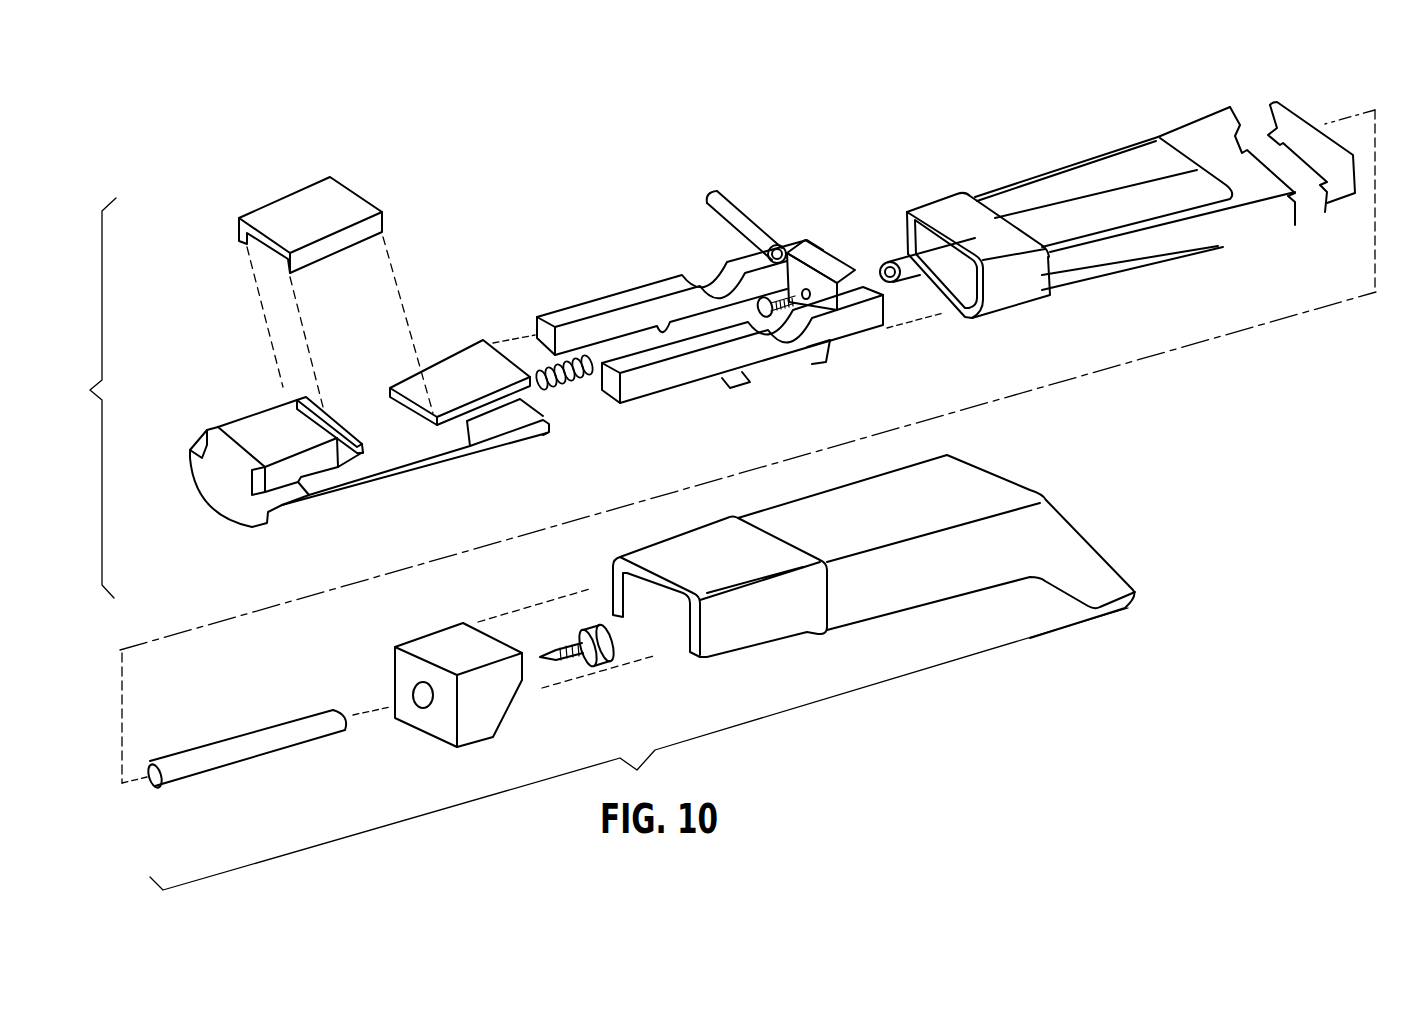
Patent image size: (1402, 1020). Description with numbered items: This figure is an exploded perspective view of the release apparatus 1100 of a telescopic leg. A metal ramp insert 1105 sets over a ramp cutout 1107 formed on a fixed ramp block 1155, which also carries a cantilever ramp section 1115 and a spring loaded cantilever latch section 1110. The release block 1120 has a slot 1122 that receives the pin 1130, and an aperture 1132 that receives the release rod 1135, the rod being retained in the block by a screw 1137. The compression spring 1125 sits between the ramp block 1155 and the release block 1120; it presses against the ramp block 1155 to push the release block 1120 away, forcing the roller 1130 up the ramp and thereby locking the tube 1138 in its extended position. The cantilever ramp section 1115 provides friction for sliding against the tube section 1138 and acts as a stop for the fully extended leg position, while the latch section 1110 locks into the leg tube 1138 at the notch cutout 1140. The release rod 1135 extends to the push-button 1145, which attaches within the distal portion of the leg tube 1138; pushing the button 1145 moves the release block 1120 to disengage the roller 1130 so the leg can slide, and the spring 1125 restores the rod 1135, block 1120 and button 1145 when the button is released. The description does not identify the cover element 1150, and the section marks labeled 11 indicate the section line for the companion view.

The release apparatus 1100 is at (793, 78).
The metal ramp insert 1105 is at (298, 202).
The ramp cutout 1107 is at (368, 430).
The spring loaded cantilever latch section 1110 is at (263, 432).
The cantilever ramp section 1115 is at (466, 368).
The release block 1120 is at (602, 302).
The slot 1122 is at (810, 335).
The compression spring 1125 is at (566, 392).
The pin 1130 is at (723, 197).
The aperture 1132 is at (808, 290).
The release rod 1135 is at (890, 261).
The screw 1137 is at (781, 244).
The tube section 1138 is at (948, 206).
The notch cutout 1140 is at (1060, 162).
The push-button 1145 is at (490, 700).
The cover 1150 is at (992, 496).
The fixed ramp block 1155 is at (440, 522).
The section line 11 is at (113, 483).